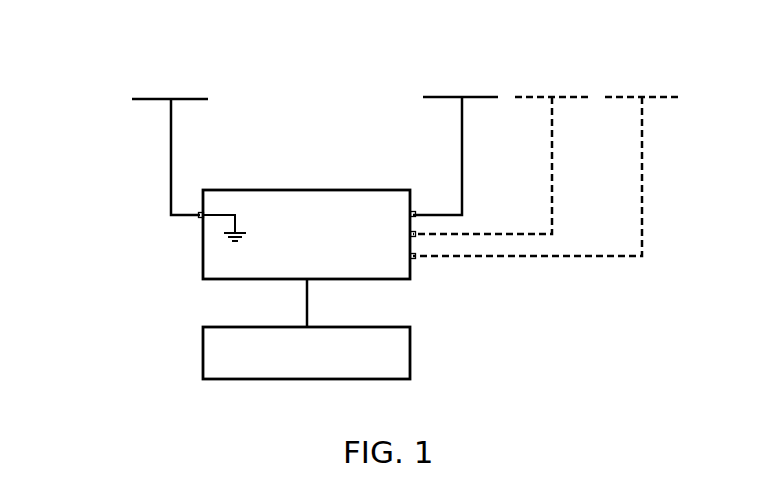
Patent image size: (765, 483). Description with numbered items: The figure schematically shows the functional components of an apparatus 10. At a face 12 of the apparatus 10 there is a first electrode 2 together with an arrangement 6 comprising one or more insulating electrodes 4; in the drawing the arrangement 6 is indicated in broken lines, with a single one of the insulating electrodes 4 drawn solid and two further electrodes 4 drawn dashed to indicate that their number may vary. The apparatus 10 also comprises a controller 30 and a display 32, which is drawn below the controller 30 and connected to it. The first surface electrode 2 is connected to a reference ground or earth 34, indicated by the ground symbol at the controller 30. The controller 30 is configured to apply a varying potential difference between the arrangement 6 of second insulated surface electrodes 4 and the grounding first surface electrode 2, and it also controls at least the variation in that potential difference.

The apparatus 10 is at (111, 274).
The face 12 is at (366, 85).
The arrangement 6 is at (600, 75).
The first electrode 2 is at (171, 180).
The insulating electrode 4 is at (462, 158).
The controller 30 is at (301, 190).
The display 32 is at (412, 358).
The reference ground 34 is at (247, 238).